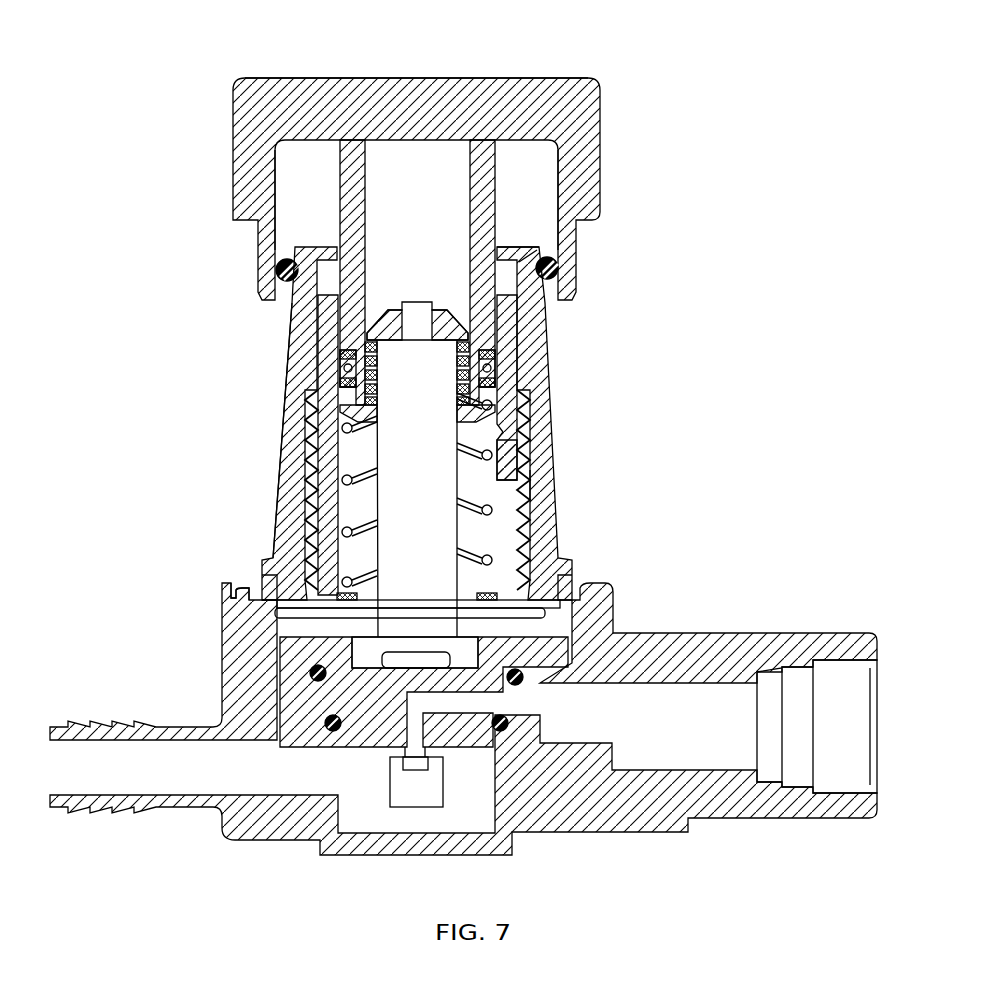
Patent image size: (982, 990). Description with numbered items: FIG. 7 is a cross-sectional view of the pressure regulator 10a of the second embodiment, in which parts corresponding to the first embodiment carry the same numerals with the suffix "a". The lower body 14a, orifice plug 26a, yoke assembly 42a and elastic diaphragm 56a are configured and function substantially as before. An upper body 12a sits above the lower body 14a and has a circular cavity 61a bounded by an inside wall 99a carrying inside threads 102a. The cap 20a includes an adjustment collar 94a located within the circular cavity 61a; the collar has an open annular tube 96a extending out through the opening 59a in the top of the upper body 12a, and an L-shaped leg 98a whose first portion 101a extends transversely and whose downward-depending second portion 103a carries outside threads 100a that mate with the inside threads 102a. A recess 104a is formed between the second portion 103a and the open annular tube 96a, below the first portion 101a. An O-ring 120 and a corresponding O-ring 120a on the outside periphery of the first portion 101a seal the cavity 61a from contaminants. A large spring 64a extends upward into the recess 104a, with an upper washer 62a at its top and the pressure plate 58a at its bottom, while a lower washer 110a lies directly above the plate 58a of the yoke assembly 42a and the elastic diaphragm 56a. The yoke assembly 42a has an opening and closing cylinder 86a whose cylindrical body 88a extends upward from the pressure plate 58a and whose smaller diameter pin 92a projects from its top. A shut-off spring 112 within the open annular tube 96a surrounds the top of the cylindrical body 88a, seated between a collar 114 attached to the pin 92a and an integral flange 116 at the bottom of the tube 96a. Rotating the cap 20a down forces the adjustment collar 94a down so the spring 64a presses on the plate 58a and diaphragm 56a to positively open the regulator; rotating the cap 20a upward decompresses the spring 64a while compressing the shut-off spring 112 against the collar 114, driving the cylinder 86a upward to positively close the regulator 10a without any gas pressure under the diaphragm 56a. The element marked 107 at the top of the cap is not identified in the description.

The pressure regulator 10a is at (175, 335).
The upper body 12a is at (282, 413).
The lower body 14a is at (579, 835).
The cap 20a is at (557, 78).
The orifice plug 26a is at (576, 610).
The yoke assembly 42a is at (372, 520).
The elastic diaphragm 56a is at (245, 585).
The pressure plate 58a is at (290, 575).
The opening 59a is at (553, 256).
The circular cavity 61a is at (550, 555).
The upper washer 62a is at (328, 350).
The large spring 64a is at (506, 380).
The opening and closing cylinder 86a is at (472, 522).
The cylindrical body 88a is at (500, 462).
The smaller diameter pin 92a is at (512, 322).
The adjustment collar 94a is at (510, 173).
The open annular tube 96a is at (480, 212).
The L-shaped leg 98a is at (497, 412).
The inside wall 99a is at (300, 478).
The outside threads 100a is at (524, 442).
The first portion 101a is at (497, 352).
The inside threads 102a is at (526, 486).
The second portion 103a is at (519, 390).
The recess 104a is at (340, 362).
The cap top wall 107 is at (440, 105).
The lower washer 110a is at (318, 600).
The shut-off spring 112 is at (365, 392).
The collar 114 is at (385, 335).
The integral flange 116 is at (462, 418).
The O-ring 120 is at (278, 262).
The O-ring 120a is at (566, 280).